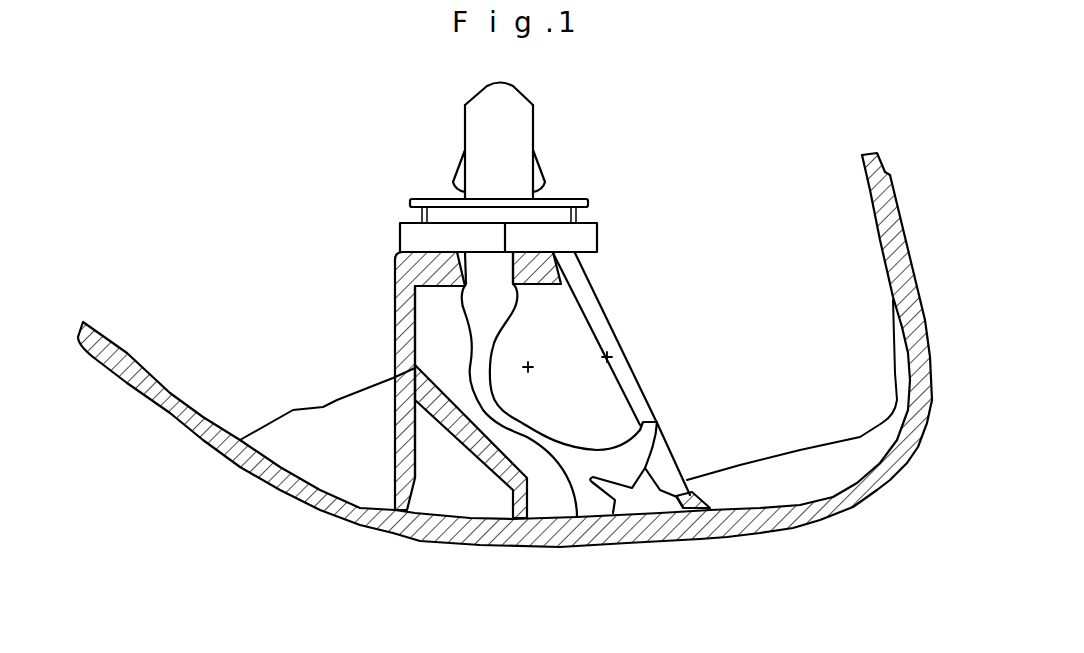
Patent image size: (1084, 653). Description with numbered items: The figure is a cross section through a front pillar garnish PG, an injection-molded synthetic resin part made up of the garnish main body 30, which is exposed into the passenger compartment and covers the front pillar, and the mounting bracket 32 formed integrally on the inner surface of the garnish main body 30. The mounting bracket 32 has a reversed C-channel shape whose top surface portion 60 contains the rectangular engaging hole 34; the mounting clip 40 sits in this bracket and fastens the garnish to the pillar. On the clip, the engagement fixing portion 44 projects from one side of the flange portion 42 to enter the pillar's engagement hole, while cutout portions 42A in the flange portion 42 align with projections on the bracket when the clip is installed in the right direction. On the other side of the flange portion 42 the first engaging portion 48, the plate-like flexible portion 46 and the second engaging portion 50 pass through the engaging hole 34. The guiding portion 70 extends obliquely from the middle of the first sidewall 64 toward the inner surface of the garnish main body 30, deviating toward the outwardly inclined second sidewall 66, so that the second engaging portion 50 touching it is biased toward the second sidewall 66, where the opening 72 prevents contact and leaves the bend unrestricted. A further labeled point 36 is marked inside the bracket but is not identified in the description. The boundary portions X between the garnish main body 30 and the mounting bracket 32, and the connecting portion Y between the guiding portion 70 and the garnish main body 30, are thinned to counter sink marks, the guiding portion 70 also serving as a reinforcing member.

The garnish main body 30 is at (765, 550).
The pillar garnish PG is at (290, 533).
The mounting bracket 32 is at (387, 302).
The engaging hole 34 is at (563, 259).
The axis point 36 is at (523, 377).
The mounting clip 40 is at (552, 133).
The flange portion 42 is at (408, 238).
The cutout portions 42A is at (578, 240).
The engagement fixing portion 44 is at (477, 130).
The flexible portion 46 is at (515, 422).
The first engaging portion 48 is at (512, 307).
The second engaging portion 50 is at (643, 452).
The top surface portion 60 is at (460, 275).
The first sidewall 64 is at (402, 357).
The second sidewall 66 is at (643, 397).
The guiding portion 70 is at (472, 440).
The opening 72 is at (612, 346).
The boundary portions X is at (393, 495).
The connecting portion Y is at (524, 487).